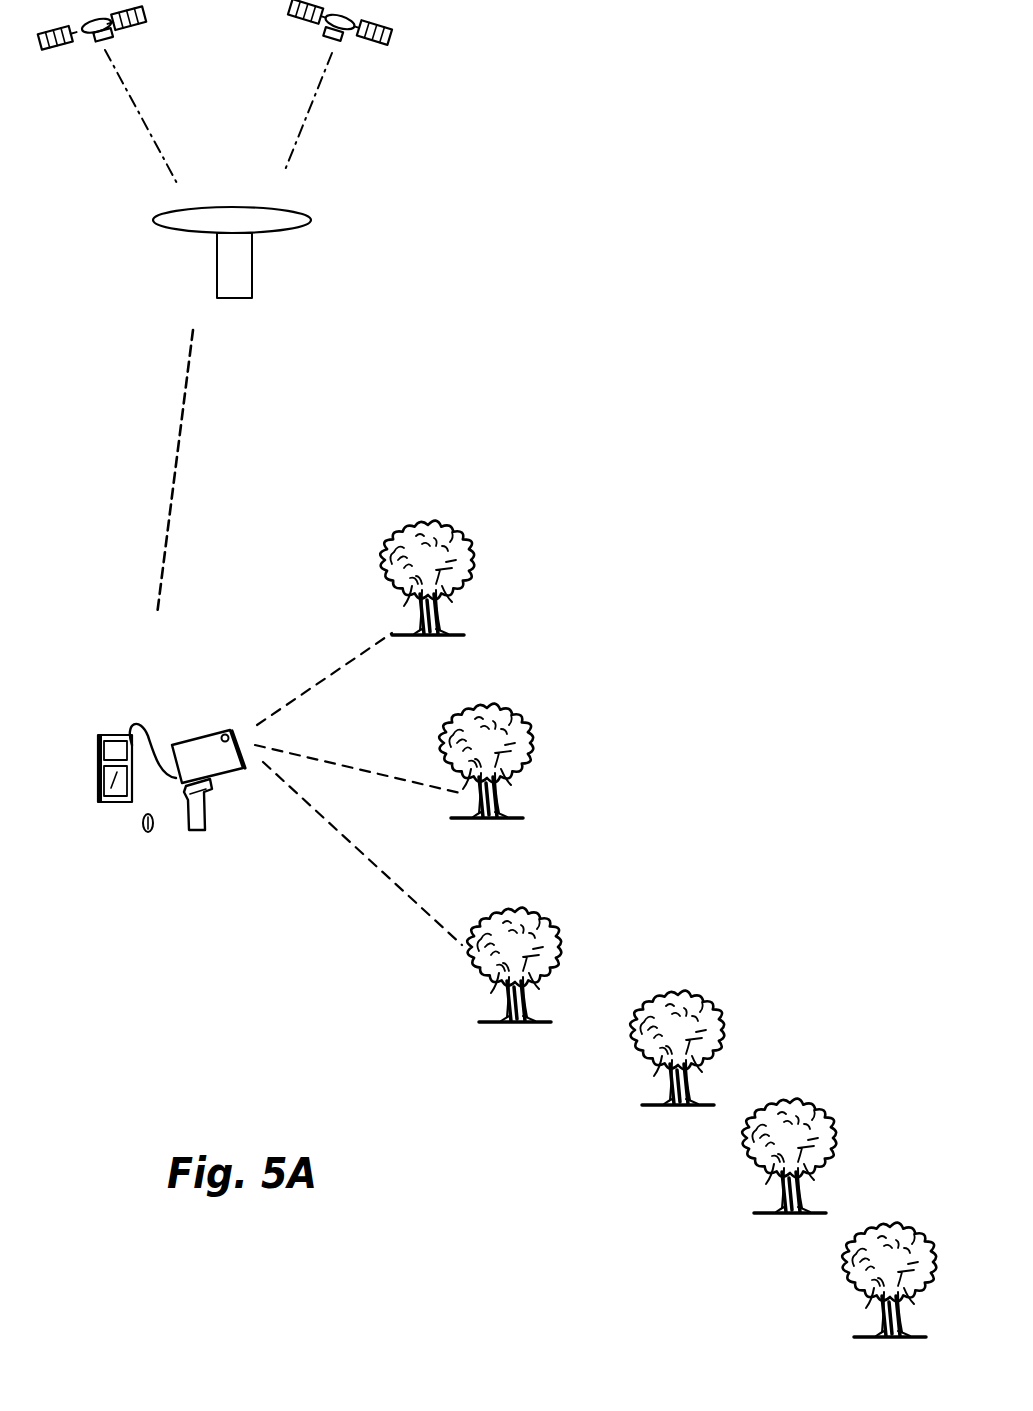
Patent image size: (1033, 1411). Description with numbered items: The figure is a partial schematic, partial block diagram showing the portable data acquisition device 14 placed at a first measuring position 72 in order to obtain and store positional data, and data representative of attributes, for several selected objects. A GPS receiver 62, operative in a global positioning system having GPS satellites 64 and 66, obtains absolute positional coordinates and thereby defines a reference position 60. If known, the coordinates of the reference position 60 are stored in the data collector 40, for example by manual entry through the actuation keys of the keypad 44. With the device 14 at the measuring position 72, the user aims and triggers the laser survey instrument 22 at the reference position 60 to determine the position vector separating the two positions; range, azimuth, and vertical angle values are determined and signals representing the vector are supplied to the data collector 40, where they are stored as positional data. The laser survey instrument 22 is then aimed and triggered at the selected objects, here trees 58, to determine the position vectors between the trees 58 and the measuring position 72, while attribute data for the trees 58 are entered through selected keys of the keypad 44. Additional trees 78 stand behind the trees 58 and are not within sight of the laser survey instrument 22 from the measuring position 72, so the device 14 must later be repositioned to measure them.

The portable data acquisition device 14 is at (256, 862).
The laser survey instrument 22 is at (224, 728).
The data collector 40 is at (103, 740).
The keypad 44 is at (117, 782).
The trees 58 is at (455, 548).
The reference position 60 is at (197, 295).
The GPS receiver 62 is at (293, 228).
The GPS satellite 64 is at (123, 30).
The GPS satellite 66 is at (380, 45).
The measuring position 72 is at (145, 840).
The trees 78 is at (650, 1060).